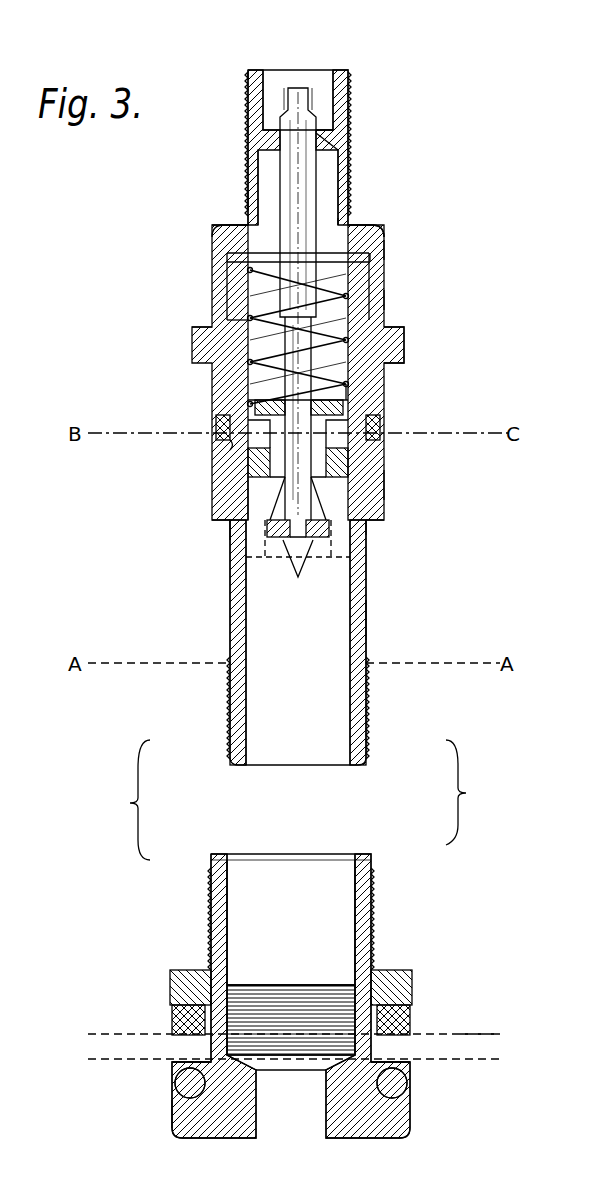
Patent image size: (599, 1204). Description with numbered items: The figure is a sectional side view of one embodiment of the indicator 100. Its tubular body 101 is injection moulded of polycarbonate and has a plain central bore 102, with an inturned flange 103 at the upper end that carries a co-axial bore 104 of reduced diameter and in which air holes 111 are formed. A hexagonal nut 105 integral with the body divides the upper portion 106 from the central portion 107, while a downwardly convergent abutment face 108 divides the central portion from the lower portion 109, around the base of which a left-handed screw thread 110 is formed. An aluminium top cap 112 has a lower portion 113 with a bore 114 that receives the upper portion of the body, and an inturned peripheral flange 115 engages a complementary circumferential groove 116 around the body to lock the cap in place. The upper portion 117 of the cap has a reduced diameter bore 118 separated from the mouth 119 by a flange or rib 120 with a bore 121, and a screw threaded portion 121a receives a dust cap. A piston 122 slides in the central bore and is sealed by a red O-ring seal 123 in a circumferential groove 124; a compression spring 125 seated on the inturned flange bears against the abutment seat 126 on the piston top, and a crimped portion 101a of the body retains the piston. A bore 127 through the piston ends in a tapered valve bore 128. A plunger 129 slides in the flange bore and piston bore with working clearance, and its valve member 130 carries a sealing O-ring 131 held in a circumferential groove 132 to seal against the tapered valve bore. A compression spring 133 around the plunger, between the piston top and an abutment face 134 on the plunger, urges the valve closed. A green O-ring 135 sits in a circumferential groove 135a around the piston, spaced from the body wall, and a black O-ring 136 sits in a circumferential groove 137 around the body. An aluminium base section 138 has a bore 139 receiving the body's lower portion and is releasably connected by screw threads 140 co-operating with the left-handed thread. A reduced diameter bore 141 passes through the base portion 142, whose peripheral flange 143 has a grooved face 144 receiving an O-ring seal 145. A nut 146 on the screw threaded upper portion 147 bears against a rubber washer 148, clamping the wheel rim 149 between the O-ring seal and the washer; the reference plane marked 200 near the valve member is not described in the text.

The indicator 100 is at (462, 118).
The tubular body 101 is at (460, 503).
The crimped portion 101a is at (232, 542).
The plain central bore 102 is at (272, 672).
The inturned flange 103 is at (376, 232).
The co-axial bore 104 is at (346, 228).
The hexagonal nut 105 is at (404, 348).
The upper portion of the body 106 is at (382, 272).
The central portion of the body 107 is at (395, 480).
The downwardly convergent abutment face 108 is at (378, 522).
The lower portion of the body 109 is at (366, 632).
The left-handed screw thread 110 is at (364, 713).
The body top face 111 is at (246, 228).
The top cap 112 is at (244, 156).
The lower portion of the cap 113 is at (386, 250).
The bore of the cap 114 is at (226, 262).
The inturned peripheral flange 115 is at (250, 321).
The circumferential groove 116 is at (382, 300).
The upper portion of the cap 117 is at (247, 200).
The reduced diameter bore 118 is at (330, 177).
The mouth 119 is at (322, 78).
The flange or rib 120 is at (340, 150).
The bore of the rib 121 is at (325, 130).
The screw threaded portion 121a is at (249, 80).
The piston 122 is at (247, 523).
The red-coloured O-ring seal 123 is at (258, 501).
The circumferential groove 124 is at (246, 486).
The compression spring 125 is at (206, 345).
The abutment seat 126 is at (232, 398).
The bore through the piston 127 is at (350, 401).
The tapered valve bore 128 is at (332, 500).
The plunger 129 is at (296, 88).
The valve member 130 is at (298, 580).
The sealing O-ring 131 is at (277, 548).
The circumferential groove 132 is at (312, 548).
The compression spring 133 is at (345, 392).
The abutment face 134 is at (262, 272).
The green O-ring 135 is at (350, 463).
The circumferential groove 135a is at (229, 423).
The black O-ring 136 is at (380, 430).
The circumferential groove 137 is at (222, 446).
The base section 138 is at (418, 863).
The bore of the base section 139 is at (340, 890).
The screw threads 140 is at (227, 1003).
The reduced diameter bore 141 is at (290, 1140).
The base portion 142 is at (410, 1122).
The peripheral flange 143 is at (410, 1088).
The grooved face 144 is at (194, 1100).
The O-ring seal 145 is at (176, 1042).
The nut 146 is at (413, 985).
The screw threaded upper portion 147 is at (374, 920).
The rubber washer 148 is at (412, 1016).
The wheel rim 149 is at (470, 1033).
The reference plane 200 is at (346, 558).